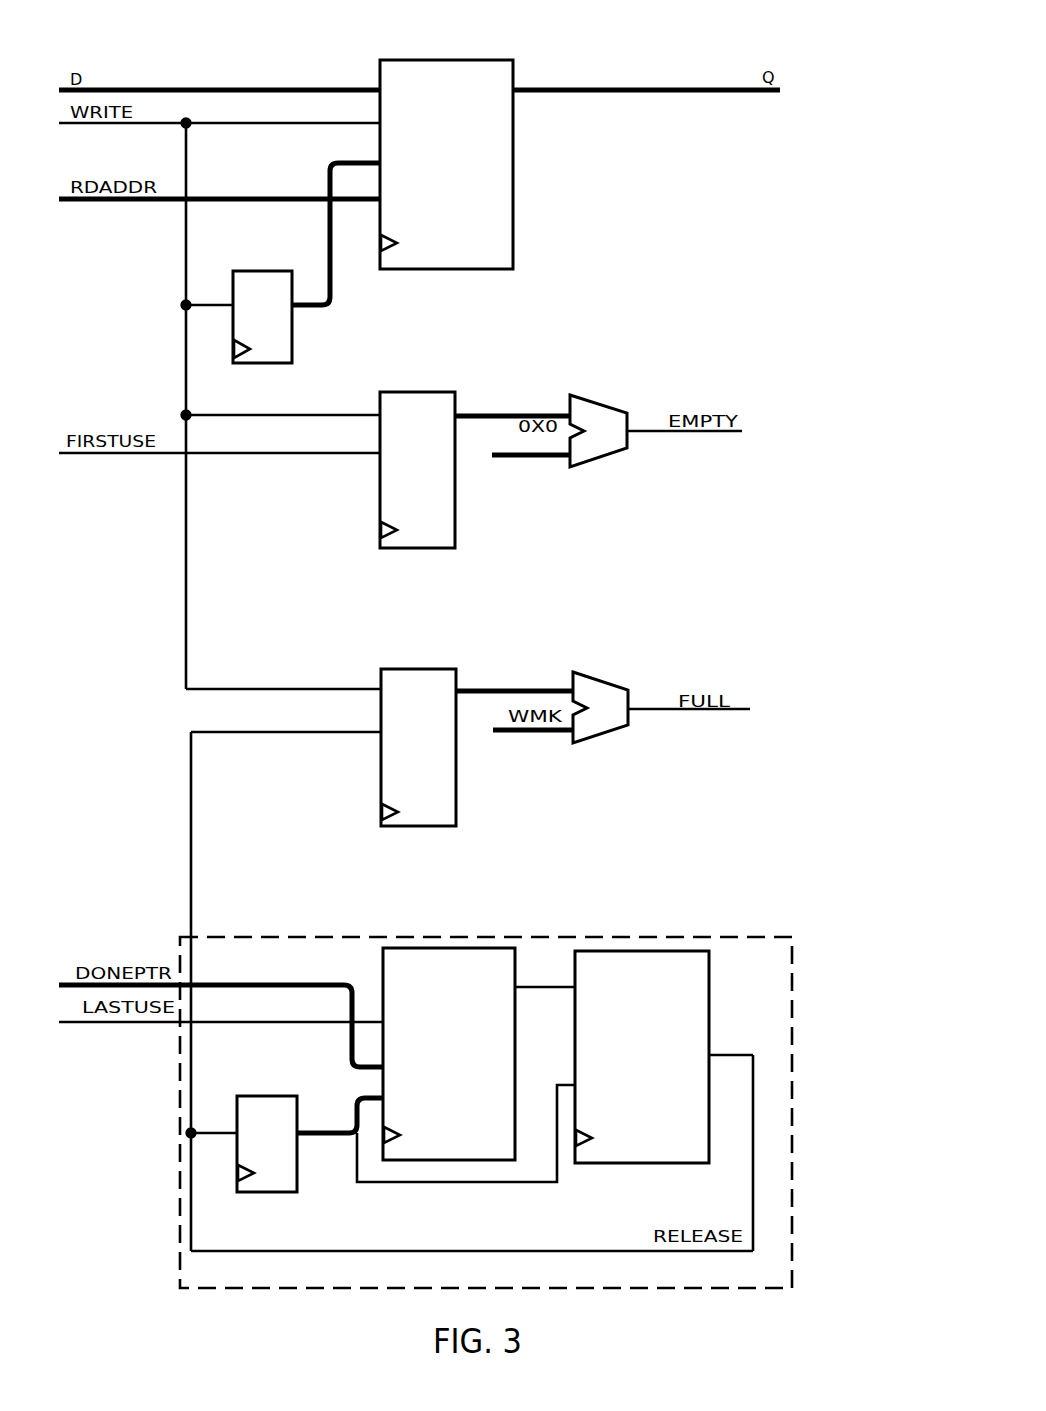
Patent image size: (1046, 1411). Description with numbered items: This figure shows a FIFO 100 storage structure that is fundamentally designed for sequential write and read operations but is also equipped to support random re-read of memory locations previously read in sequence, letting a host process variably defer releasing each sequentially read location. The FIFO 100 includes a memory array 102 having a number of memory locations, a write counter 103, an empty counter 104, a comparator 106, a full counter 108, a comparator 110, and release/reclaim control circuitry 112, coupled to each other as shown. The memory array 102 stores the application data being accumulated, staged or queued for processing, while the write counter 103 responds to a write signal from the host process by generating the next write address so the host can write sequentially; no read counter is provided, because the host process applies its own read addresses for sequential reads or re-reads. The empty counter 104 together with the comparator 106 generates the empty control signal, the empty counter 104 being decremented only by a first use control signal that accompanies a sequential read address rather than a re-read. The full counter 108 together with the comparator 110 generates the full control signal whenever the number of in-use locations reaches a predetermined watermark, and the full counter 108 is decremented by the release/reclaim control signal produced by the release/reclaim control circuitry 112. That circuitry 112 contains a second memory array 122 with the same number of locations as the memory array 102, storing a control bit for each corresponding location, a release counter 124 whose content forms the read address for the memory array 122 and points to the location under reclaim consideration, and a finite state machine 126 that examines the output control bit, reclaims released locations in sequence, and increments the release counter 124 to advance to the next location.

The FIFO 100 is at (871, 470).
The memory array 102 is at (500, 227).
The write counter 103 is at (283, 349).
The empty counter 104 is at (456, 497).
The comparator 106 is at (590, 459).
The full counter 108 is at (450, 790).
The comparator 110 is at (598, 737).
The release/reclaim control circuitry 112 is at (780, 1006).
The memory array 122 is at (503, 1152).
The release counter 124 is at (290, 1182).
The finite state machine 126 is at (692, 1151).